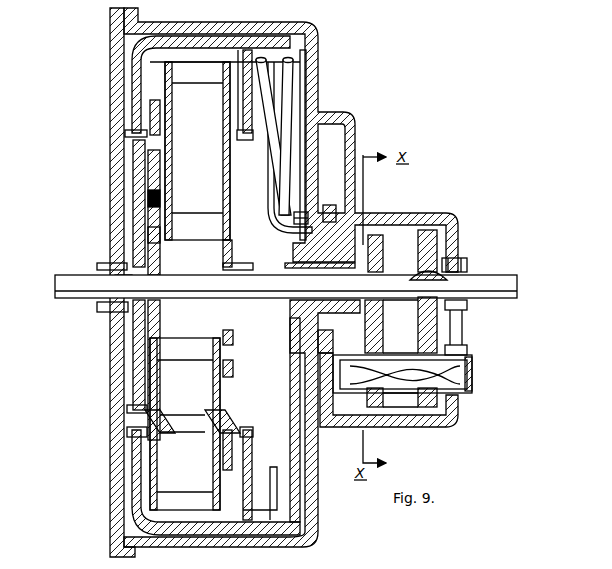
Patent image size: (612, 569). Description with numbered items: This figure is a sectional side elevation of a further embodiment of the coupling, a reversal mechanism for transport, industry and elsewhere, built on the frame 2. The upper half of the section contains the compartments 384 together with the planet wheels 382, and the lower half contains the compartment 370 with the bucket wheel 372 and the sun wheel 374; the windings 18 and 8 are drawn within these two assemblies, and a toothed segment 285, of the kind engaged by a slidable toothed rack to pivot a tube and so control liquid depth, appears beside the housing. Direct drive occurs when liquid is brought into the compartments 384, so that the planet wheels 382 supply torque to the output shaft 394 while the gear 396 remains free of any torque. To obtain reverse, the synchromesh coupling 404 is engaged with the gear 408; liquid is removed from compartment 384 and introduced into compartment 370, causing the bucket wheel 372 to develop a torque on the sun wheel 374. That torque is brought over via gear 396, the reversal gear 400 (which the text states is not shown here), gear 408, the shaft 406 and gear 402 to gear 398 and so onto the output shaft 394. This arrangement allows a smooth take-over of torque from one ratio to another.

The frame 2 is at (118, 548).
The lower coil 8 is at (183, 496).
The upper coil 18 is at (190, 226).
The toothed segment 285 is at (336, 212).
The compartment 370 is at (170, 518).
The bucket wheel 372 is at (150, 488).
The sun wheel 374 is at (225, 317).
The planet wheels 382 is at (160, 87).
The compartments 384 is at (180, 50).
The output shaft 394 is at (510, 290).
The gear 396 is at (437, 244).
The gear 398 is at (458, 266).
The reversal gear 400 is at (393, 333).
The gear 402 is at (440, 345).
The synchromesh coupling 404 is at (450, 366).
The shaft 406 is at (472, 386).
The gear 408 is at (392, 396).